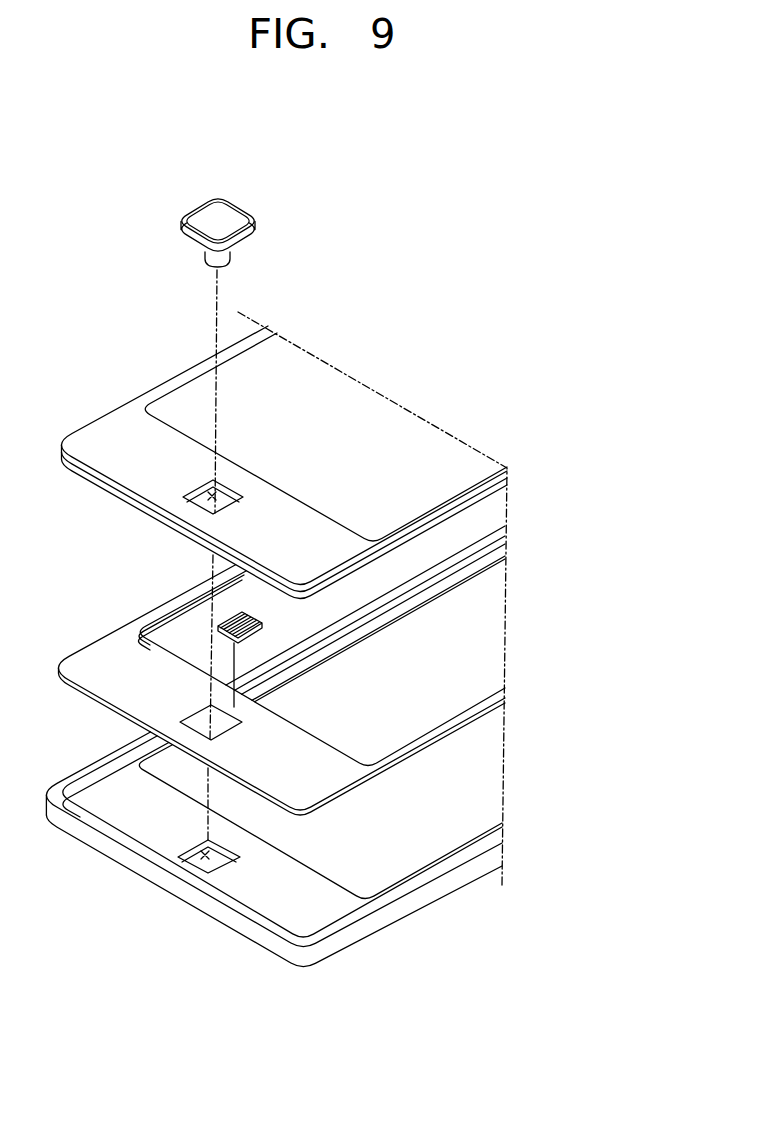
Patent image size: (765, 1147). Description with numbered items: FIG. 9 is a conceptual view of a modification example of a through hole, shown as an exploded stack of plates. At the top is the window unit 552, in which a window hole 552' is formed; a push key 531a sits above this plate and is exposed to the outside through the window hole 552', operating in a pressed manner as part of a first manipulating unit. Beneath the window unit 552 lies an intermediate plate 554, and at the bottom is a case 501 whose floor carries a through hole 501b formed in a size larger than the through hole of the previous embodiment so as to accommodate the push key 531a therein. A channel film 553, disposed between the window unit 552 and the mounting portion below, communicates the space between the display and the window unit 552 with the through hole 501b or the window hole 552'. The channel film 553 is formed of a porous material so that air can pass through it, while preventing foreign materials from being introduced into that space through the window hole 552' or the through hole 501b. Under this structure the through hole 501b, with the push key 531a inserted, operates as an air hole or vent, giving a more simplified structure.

The push key 531a is at (233, 212).
The window unit 552 is at (321, 462).
The window hole 552' is at (170, 525).
The channel film 553 is at (218, 623).
The middle plate (printed circuit board) 554 is at (500, 702).
The case (base housing) 501 is at (495, 859).
The through hole 501b is at (194, 861).